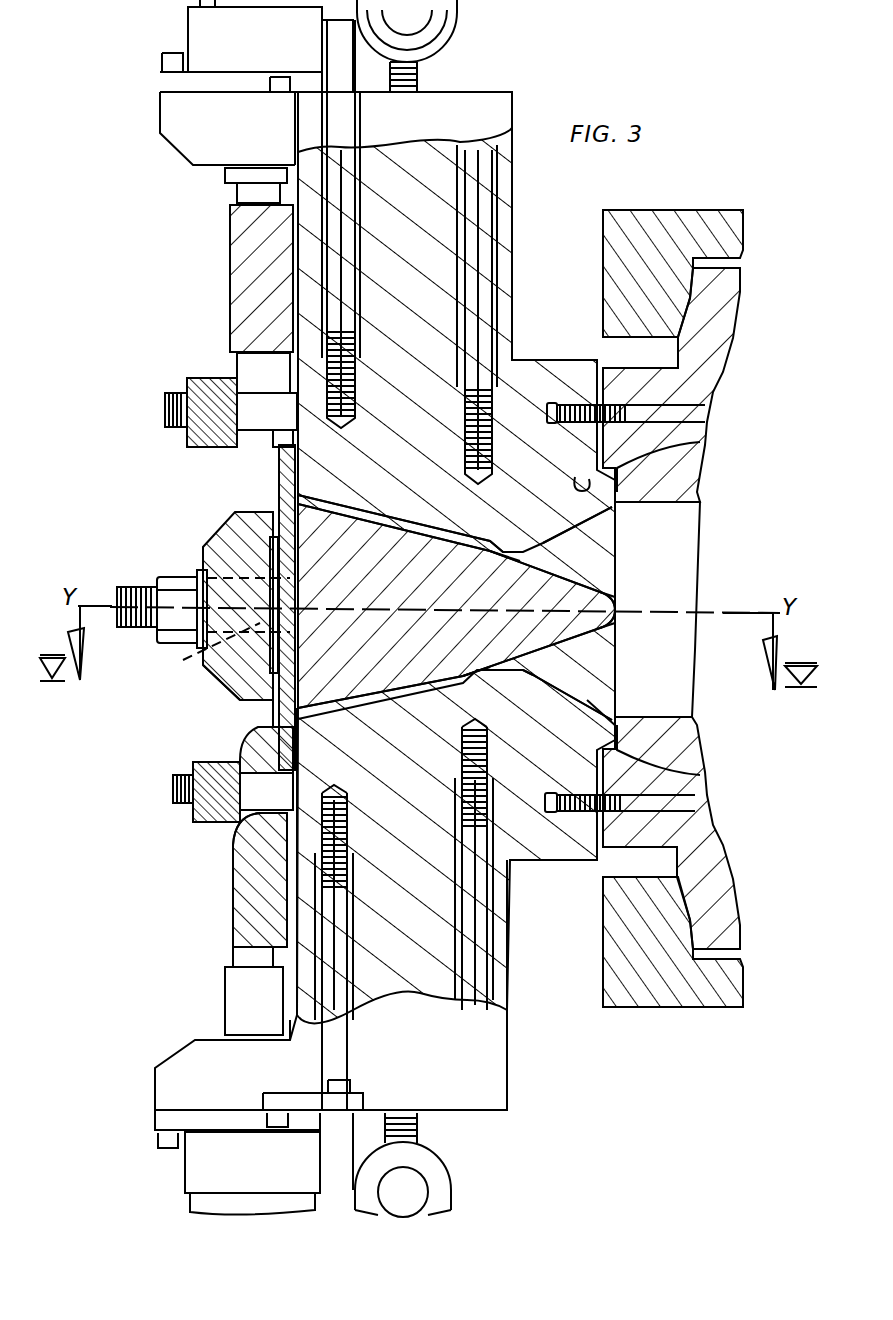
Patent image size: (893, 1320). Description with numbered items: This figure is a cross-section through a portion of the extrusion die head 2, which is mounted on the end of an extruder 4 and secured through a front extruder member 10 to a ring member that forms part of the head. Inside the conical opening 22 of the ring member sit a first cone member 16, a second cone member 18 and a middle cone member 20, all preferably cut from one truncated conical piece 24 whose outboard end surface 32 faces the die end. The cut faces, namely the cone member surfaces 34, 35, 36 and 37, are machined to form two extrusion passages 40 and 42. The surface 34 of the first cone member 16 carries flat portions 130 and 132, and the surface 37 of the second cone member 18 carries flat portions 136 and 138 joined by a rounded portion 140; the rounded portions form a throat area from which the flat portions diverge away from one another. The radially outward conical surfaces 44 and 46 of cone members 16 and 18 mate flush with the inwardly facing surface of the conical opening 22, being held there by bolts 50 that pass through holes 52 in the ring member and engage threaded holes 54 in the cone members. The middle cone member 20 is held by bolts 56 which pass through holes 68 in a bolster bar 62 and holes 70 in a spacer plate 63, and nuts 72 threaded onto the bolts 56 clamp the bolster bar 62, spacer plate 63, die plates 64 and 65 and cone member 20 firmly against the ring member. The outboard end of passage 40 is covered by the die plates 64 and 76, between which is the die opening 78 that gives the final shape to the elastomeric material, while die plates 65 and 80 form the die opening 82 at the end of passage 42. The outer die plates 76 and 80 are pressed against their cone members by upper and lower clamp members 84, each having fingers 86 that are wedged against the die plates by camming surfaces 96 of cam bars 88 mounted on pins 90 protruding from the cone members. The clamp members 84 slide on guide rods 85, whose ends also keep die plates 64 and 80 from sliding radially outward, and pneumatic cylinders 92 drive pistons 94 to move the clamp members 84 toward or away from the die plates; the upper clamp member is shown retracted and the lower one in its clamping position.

The extrusion die head 2 is at (456, 68).
The extruder 4 is at (647, 211).
The front extruder member 10 is at (713, 290).
The first cone member 16 is at (700, 502).
The second cone member 18 is at (613, 713).
The middle cone member 20 is at (625, 614).
The conical opening 22 is at (310, 318).
The truncated conical piece 24 is at (298, 885).
The outboard end surface 32 is at (283, 442).
The cone member surface 34 is at (627, 538).
The cone member surface 35 is at (613, 592).
The cone member surface 36 is at (605, 636).
The cone member surface 37 is at (627, 679).
The extrusion passage 40 is at (608, 580).
The extrusion passage 42 is at (600, 673).
The conical surface 44 is at (518, 473).
The conical surface 46 is at (512, 887).
The bolts 50 is at (482, 260).
The holes 52 is at (497, 222).
The threaded holes 54 is at (356, 428).
The bolts 56 is at (142, 628).
The bolster bar 62 is at (228, 534).
The spacer plate 63 is at (273, 627).
The die plate 64 is at (272, 522).
The die plate 65 is at (242, 693).
The holes 68 is at (205, 563).
The holes 70 is at (208, 648).
The nuts 72 is at (162, 578).
The die plate 76 is at (280, 470).
The die opening 78 is at (297, 498).
The die plate 80 is at (243, 748).
The die opening 82 is at (273, 715).
The clamp members 84 is at (238, 275).
The guide rods 85 is at (287, 200).
The fingers 86 is at (245, 355).
The cam bars 88 is at (215, 380).
The pins 90 is at (172, 405).
The pneumatic cylinders 92 is at (195, 28).
The pistons 94 is at (240, 190).
The camming surfaces 96 is at (238, 845).
The flat portion 130 is at (517, 556).
The flat portion 132 is at (600, 520).
The flat portion 136 is at (552, 549).
The flat portion 138 is at (597, 697).
The rounded portion 140 is at (545, 663).